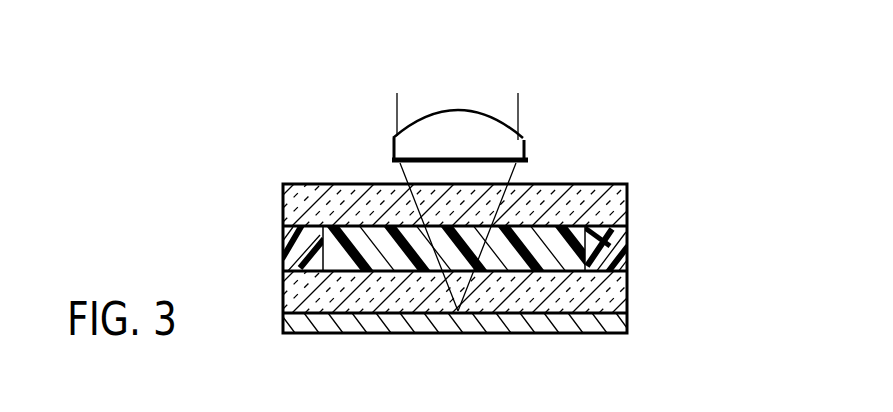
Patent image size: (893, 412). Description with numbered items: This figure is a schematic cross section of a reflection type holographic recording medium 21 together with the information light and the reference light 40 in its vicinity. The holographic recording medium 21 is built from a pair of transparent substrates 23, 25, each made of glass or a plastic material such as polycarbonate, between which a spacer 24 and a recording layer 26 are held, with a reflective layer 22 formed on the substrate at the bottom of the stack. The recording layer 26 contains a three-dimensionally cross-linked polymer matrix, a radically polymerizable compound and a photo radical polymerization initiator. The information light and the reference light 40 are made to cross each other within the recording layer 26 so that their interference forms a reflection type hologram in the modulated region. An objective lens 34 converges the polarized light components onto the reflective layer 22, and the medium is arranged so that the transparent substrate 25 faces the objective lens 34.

The reflection type holographic recording medium 21 is at (680, 182).
The reflective layer 22 is at (507, 334).
The transparent substrate 23 is at (628, 293).
The spacer 24 is at (628, 246).
The transparent substrate 25 is at (628, 203).
The recording layer 26 is at (552, 272).
The objective lens 34 is at (528, 150).
The reference light 40 is at (519, 103).